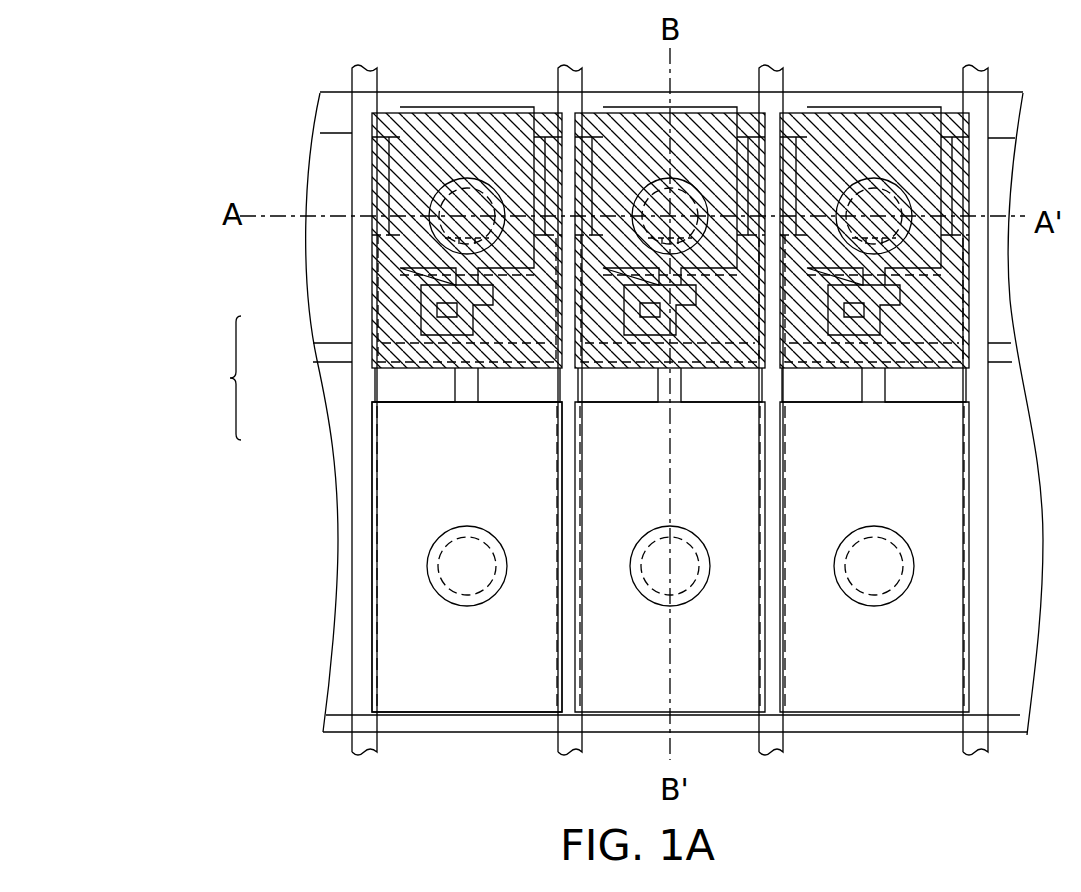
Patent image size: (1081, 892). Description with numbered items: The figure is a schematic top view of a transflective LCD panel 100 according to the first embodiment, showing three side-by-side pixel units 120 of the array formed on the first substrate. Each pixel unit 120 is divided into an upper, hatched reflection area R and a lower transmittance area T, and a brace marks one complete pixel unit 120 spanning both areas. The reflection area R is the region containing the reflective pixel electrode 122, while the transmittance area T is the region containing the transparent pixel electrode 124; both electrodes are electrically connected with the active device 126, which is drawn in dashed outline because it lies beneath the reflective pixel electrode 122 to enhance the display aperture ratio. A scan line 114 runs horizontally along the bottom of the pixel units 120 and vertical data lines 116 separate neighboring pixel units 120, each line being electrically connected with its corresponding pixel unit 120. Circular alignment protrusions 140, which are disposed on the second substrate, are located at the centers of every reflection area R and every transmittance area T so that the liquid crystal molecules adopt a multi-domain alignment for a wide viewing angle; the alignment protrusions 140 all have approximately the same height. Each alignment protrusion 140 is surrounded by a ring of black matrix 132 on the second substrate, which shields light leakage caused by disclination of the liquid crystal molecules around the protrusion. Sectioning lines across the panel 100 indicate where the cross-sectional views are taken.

The LCD panel 100 is at (1048, 805).
The scan line 114 is at (431, 725).
The data line 116 is at (365, 670).
The pixel unit 120 is at (216, 378).
The reflective pixel electrode 122 is at (450, 137).
The transparent pixel electrode 124 is at (415, 620).
The active device 126 is at (395, 270).
The black matrix 132 is at (420, 205).
The alignment protrusion 140 is at (425, 225).
The reflection area R is at (398, 318).
The transmittance area T is at (420, 445).